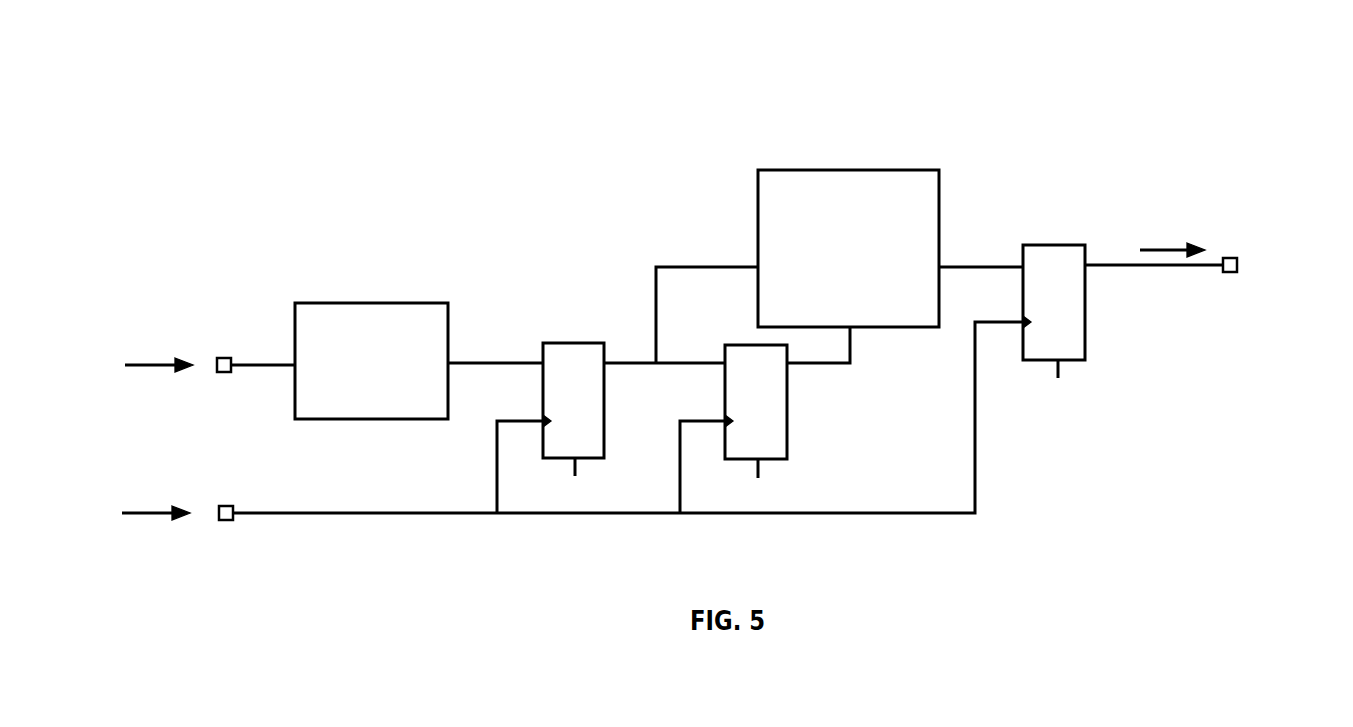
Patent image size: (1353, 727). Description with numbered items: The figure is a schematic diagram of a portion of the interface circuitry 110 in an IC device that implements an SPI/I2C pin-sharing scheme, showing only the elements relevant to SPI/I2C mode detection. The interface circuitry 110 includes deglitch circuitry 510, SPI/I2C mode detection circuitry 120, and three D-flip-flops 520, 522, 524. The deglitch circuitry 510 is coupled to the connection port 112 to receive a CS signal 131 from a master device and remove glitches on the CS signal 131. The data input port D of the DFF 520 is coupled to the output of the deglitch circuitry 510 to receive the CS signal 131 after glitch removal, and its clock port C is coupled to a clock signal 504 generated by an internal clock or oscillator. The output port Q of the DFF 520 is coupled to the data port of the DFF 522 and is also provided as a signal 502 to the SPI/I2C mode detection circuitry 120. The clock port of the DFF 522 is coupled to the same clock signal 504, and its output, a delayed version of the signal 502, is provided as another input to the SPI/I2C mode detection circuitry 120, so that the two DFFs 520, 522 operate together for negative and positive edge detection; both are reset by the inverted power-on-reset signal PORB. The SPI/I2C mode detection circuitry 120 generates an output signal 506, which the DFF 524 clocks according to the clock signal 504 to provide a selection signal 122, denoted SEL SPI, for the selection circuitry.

The interface circuitry 110 is at (190, 57).
The connection port 112 is at (221, 378).
The CS signal 131 is at (171, 340).
The deglitch circuitry 510 is at (419, 361).
The D-flip-flop 520 is at (607, 419).
The D-flip-flop 522 is at (790, 425).
The D-flip-flop 524 is at (1053, 243).
The signal 502 is at (678, 265).
The clock signal 504 is at (672, 360).
The output signal 506 is at (962, 263).
The SPI/I2C mode detection circuitry 120 is at (848, 248).
The selection signal 122 is at (1190, 225).